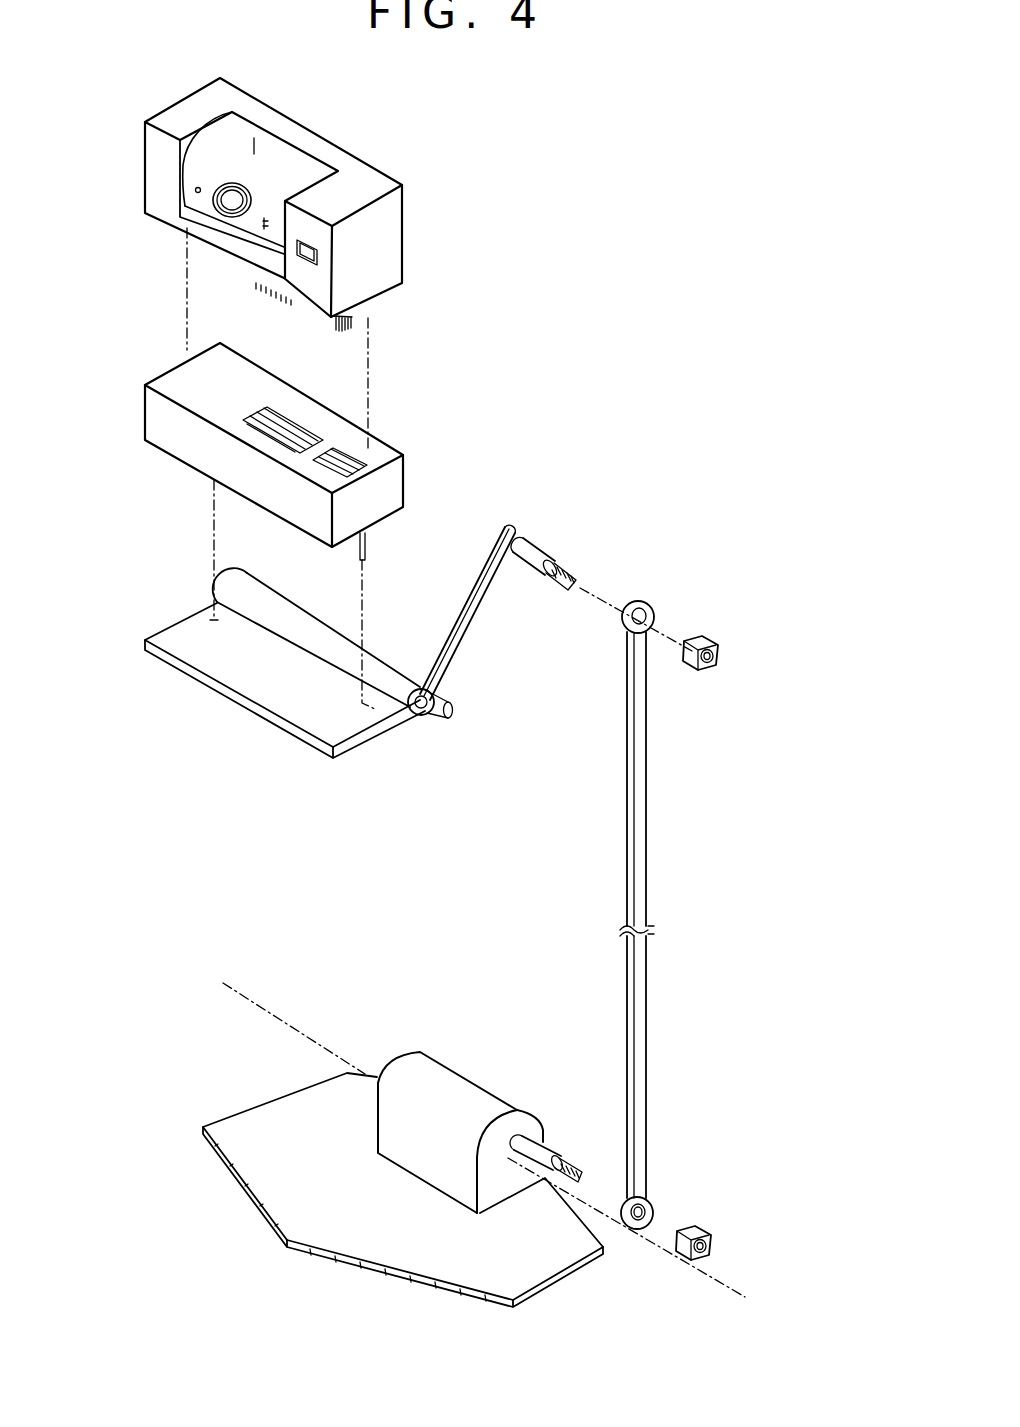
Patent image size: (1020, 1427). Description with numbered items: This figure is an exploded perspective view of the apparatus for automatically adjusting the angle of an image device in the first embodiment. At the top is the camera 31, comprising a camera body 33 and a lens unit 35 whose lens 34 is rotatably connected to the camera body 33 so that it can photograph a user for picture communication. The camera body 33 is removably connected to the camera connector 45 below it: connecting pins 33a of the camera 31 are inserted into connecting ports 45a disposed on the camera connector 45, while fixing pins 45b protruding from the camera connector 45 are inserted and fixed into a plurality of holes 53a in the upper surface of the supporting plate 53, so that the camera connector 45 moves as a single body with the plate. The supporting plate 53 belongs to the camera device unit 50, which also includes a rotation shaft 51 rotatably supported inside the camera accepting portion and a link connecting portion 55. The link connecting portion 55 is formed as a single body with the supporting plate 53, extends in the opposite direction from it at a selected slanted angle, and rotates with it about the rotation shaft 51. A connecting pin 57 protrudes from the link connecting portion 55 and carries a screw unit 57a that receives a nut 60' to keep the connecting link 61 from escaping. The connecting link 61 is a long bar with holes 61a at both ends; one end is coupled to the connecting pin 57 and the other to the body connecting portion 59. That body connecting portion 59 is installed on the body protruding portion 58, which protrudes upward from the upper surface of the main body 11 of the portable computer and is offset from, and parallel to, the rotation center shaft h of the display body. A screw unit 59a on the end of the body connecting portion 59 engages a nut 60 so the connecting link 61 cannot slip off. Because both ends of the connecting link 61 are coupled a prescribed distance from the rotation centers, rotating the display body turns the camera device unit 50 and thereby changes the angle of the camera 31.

The camera 31 is at (364, 149).
The camera body 33 is at (157, 174).
The connecting pins 33a is at (358, 313).
The lens 34 is at (228, 213).
The lens unit 35 is at (254, 152).
The camera connector 45 is at (157, 418).
The connecting ports 45a is at (300, 421).
The fixing pins 45b is at (365, 534).
The camera device unit 50 is at (522, 526).
The rotation shaft 51 is at (210, 581).
The supporting plate 53 is at (237, 697).
The holes 53a is at (388, 721).
The link connecting portion 55 is at (467, 621).
The connecting pin 57 is at (551, 556).
The screw unit 57a is at (568, 571).
The body protruding portion 58 is at (443, 1081).
The body connecting portion 59 is at (541, 1137).
The screw unit 59a is at (564, 1163).
The nut 60 is at (719, 1197).
The nut 60' is at (726, 636).
The connecting link 61 is at (645, 758).
The holes 61a is at (654, 606).
The main body 11 is at (273, 1188).
The rotation center shaft h is at (637, 1234).